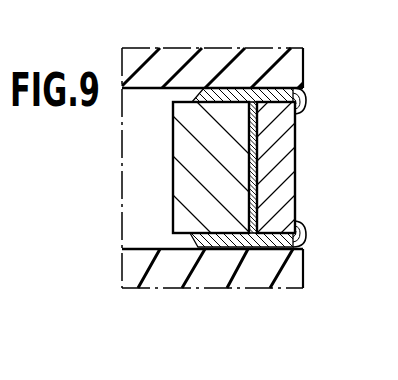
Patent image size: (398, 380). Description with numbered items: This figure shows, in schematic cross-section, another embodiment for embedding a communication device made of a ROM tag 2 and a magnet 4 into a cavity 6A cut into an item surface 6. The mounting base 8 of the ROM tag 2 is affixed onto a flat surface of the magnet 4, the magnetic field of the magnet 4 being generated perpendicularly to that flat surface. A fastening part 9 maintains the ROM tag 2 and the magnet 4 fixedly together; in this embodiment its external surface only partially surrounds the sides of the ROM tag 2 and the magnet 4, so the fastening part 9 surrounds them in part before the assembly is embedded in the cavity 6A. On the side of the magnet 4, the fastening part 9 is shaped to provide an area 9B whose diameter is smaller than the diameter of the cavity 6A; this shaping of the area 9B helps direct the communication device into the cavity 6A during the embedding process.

The ROM tag 2 is at (276, 183).
The magnet 4 is at (187, 177).
The item surface 6 is at (253, 63).
The cavity 6A is at (143, 92).
The mounting base 8 is at (257, 152).
The fastening part 9 is at (307, 102).
The area with smaller diameter 9B is at (197, 94).